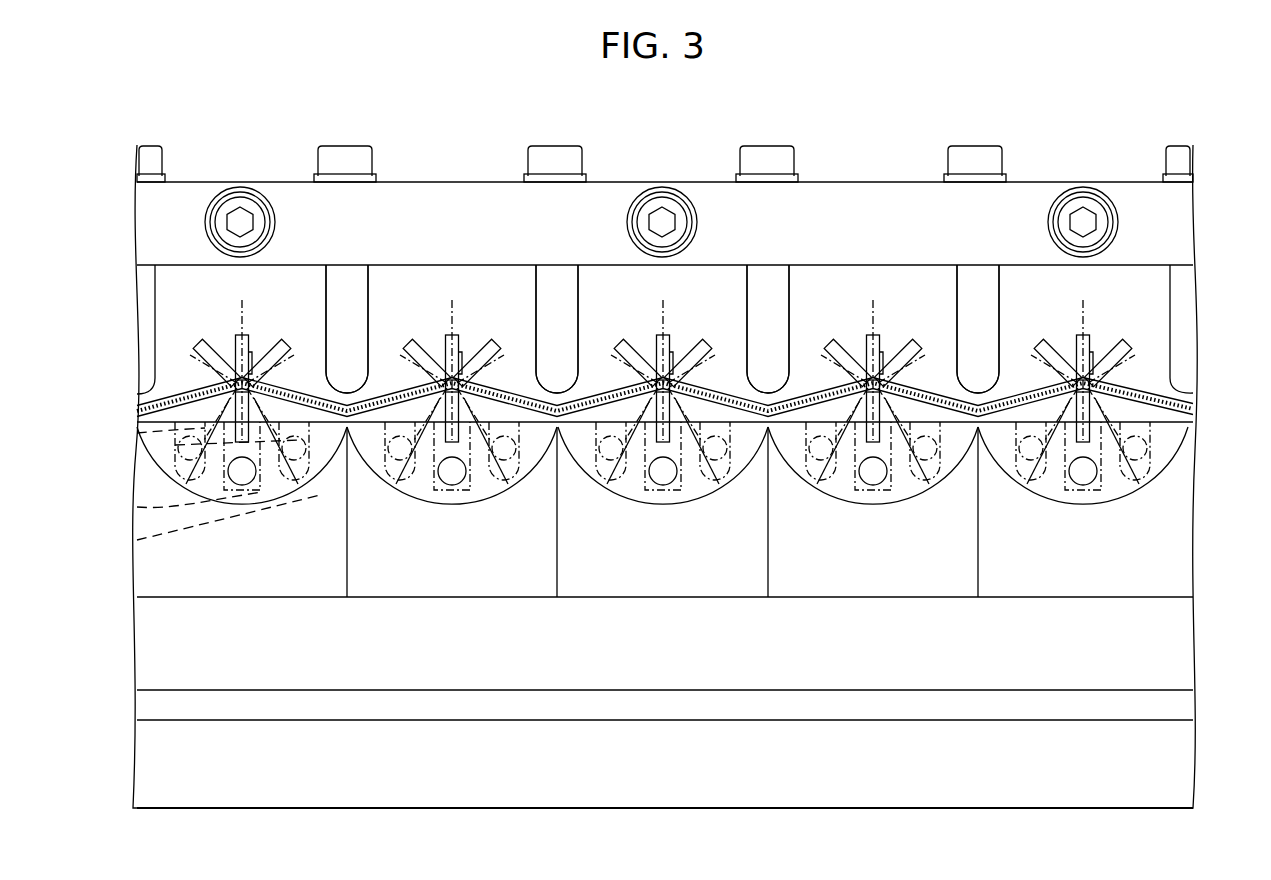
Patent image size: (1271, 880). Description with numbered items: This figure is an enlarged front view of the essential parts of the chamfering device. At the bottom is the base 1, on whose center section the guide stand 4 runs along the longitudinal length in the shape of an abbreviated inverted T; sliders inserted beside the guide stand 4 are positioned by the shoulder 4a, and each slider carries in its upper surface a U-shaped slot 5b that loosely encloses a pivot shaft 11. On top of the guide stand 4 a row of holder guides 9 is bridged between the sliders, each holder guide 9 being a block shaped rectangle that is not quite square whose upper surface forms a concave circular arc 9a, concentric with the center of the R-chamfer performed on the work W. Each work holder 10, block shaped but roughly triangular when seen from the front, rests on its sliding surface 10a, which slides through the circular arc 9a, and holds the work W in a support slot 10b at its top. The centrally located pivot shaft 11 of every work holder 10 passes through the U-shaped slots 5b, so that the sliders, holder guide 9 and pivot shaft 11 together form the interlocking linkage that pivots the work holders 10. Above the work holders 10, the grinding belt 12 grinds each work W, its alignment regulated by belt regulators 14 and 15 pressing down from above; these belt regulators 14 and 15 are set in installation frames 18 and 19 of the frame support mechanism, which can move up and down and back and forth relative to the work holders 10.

The base 1 is at (1108, 793).
The guide stand 4 is at (162, 637).
The shoulder 4a is at (168, 690).
The U-shaped slot 5b is at (137, 433).
The holder guide 9 is at (160, 557).
The concave circular arc 9a is at (575, 450).
The work holder 10 is at (440, 432).
The sliding surface 10a is at (170, 508).
The support slot 10b is at (150, 400).
The pivot shaft 11 is at (268, 372).
The grinding belt 12 is at (287, 433).
The belt regulator 14 is at (357, 296).
The belt regulator 15 is at (357, 296).
The installation frame 18 is at (827, 186).
The installation frame 19 is at (827, 186).
The work W is at (238, 380).